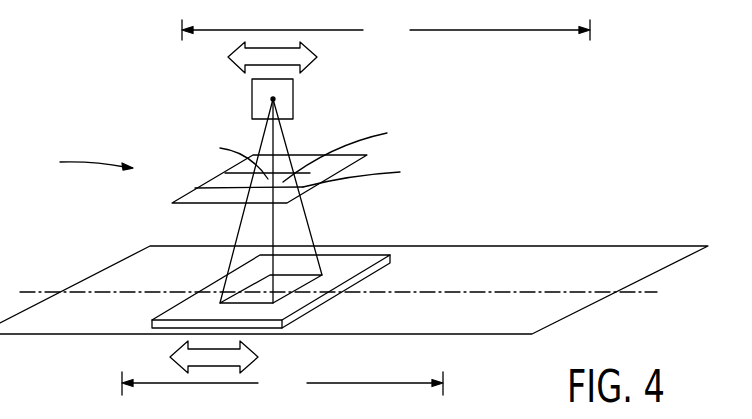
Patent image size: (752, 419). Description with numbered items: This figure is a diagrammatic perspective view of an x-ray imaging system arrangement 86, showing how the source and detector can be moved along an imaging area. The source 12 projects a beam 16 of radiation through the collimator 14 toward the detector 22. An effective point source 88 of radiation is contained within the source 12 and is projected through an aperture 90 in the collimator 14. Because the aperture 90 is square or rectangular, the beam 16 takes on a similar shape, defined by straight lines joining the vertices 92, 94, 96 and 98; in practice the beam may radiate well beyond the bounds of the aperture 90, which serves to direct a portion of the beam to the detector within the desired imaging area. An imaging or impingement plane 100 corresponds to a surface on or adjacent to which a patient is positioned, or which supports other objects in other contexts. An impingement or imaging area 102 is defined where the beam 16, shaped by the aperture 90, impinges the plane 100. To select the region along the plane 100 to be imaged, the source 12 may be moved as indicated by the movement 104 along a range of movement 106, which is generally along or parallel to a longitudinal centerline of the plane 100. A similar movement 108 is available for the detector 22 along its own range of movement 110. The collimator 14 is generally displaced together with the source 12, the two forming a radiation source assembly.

The source 12 is at (293, 101).
The collimator 14 is at (310, 173).
The beam 16 is at (310, 215).
The detector 22 is at (397, 248).
The system arrangement 86 is at (83, 163).
The effective point source 88 is at (270, 99).
The aperture 90 is at (262, 174).
The vertex 92 is at (195, 189).
The vertex 94 is at (363, 173).
The vertex 96 is at (347, 151).
The vertex 98 is at (232, 157).
The imaging plane 100 is at (93, 323).
The imaging area 102 is at (288, 281).
The movement of the source 104 is at (317, 57).
The range of movement 106 is at (386, 30).
The movement of the detector 108 is at (258, 356).
The range of movement 110 is at (282, 383).